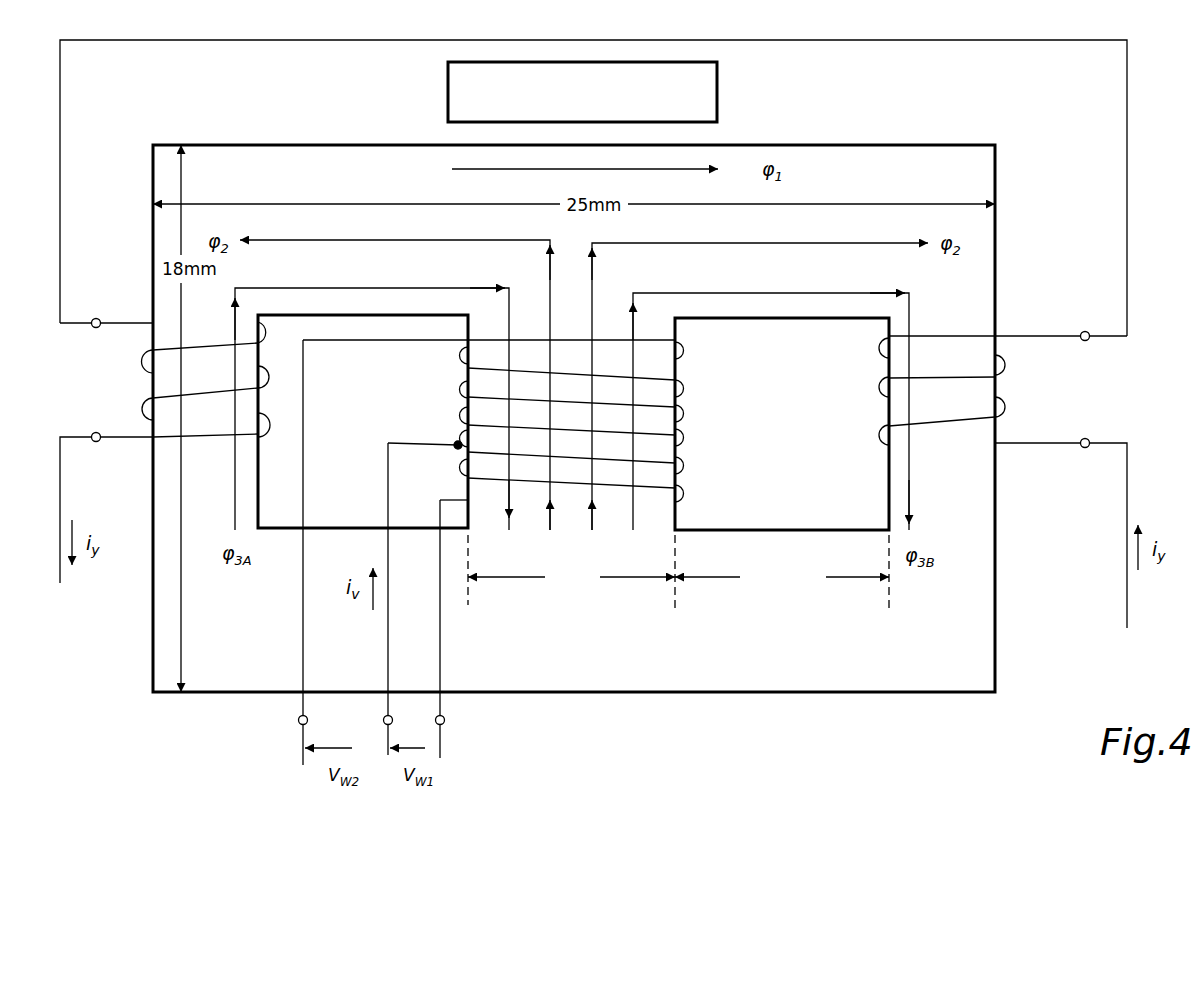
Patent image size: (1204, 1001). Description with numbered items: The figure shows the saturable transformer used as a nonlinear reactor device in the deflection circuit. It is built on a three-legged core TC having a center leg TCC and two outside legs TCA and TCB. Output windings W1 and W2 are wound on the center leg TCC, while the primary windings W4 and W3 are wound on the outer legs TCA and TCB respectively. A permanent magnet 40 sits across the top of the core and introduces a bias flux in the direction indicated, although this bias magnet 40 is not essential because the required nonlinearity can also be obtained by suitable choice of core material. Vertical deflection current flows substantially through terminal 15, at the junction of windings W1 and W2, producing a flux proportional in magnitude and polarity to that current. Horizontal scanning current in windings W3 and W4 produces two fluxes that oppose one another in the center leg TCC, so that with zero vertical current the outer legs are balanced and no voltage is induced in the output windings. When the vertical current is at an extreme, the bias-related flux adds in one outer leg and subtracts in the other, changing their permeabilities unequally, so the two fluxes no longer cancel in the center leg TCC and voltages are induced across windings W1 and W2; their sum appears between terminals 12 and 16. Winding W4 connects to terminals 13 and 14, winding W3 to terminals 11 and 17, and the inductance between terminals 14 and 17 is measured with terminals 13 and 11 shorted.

The permanent magnet 40 is at (717, 93).
The terminal 11 is at (1085, 331).
The terminal 12 is at (298, 718).
The terminal 13 is at (96, 328).
The terminal 14 is at (96, 442).
The terminal 15 is at (383, 718).
The terminal 16 is at (445, 718).
The terminal 17 is at (1085, 438).
The output winding W1 is at (456, 468).
The output winding W2 is at (457, 390).
The primary winding W3 is at (1006, 367).
The primary winding W4 is at (269, 376).
The core TC is at (957, 694).
The outside leg TCA is at (228, 518).
The outside leg TCB is at (965, 478).
The center leg TCC is at (591, 560).